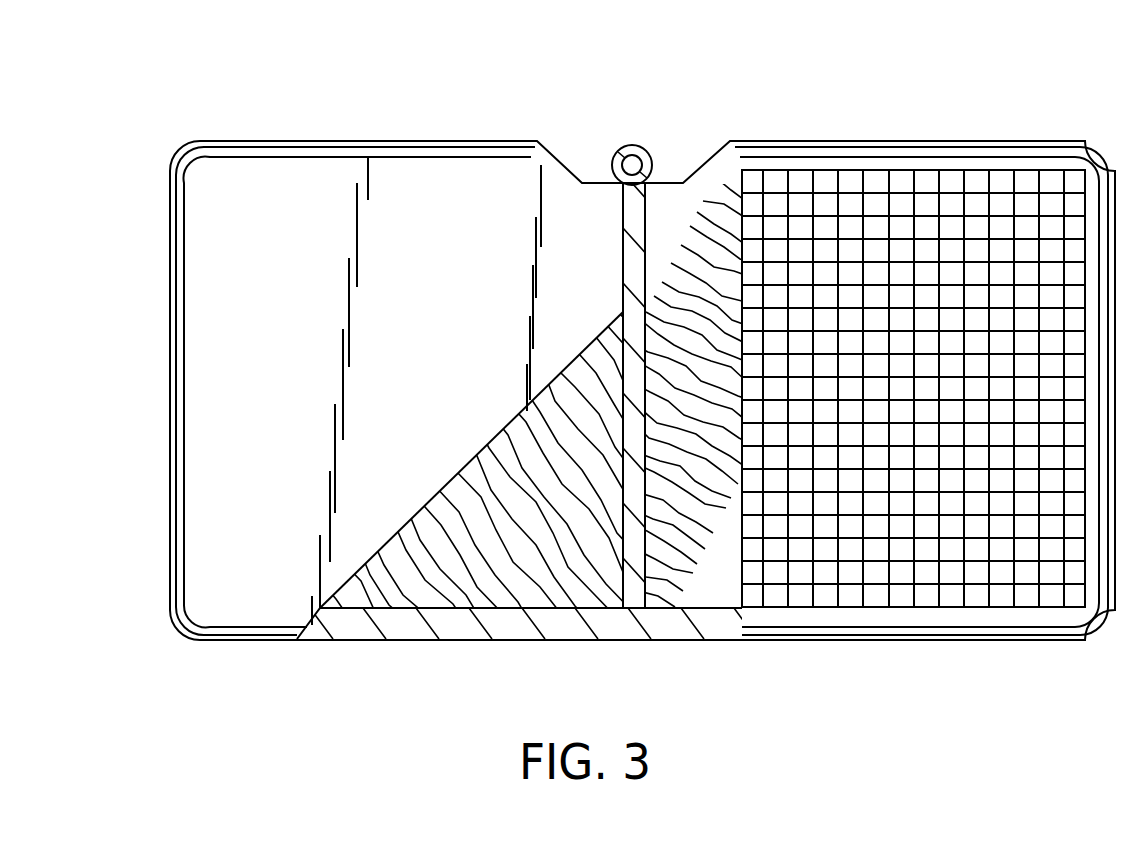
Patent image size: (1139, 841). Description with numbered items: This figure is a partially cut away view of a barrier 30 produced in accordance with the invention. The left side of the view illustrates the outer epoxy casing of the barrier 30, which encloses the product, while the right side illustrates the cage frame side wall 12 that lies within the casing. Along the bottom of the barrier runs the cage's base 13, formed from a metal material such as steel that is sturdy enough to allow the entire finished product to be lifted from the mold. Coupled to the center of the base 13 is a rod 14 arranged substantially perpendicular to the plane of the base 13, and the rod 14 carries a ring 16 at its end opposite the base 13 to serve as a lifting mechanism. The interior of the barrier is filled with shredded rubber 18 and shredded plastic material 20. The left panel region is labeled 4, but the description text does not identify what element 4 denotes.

The barrier 30 is at (196, 108).
The door panel 4 is at (391, 140).
The cage frame side wall 12 is at (1038, 641).
The base 13 is at (438, 622).
The rod 14 is at (634, 598).
The ring 16 is at (628, 144).
The shredded rubber 18 is at (519, 560).
The shredded plastic material 20 is at (822, 150).